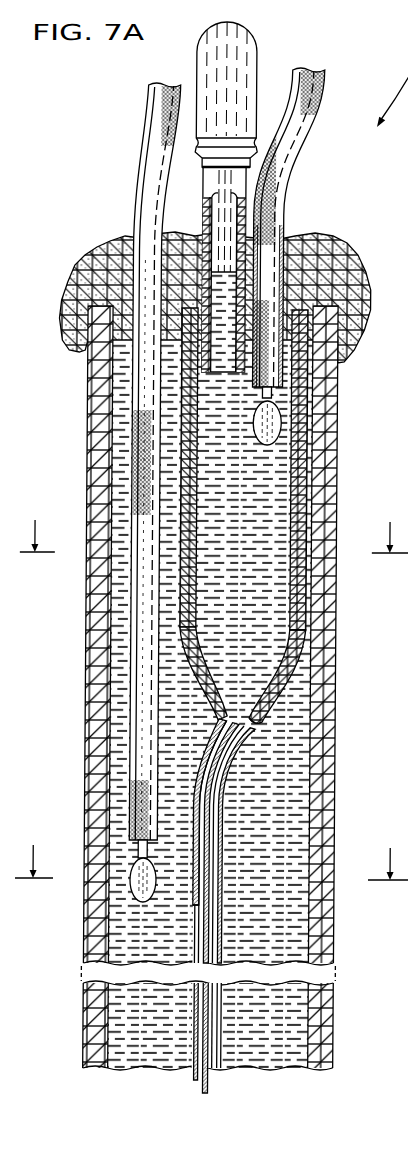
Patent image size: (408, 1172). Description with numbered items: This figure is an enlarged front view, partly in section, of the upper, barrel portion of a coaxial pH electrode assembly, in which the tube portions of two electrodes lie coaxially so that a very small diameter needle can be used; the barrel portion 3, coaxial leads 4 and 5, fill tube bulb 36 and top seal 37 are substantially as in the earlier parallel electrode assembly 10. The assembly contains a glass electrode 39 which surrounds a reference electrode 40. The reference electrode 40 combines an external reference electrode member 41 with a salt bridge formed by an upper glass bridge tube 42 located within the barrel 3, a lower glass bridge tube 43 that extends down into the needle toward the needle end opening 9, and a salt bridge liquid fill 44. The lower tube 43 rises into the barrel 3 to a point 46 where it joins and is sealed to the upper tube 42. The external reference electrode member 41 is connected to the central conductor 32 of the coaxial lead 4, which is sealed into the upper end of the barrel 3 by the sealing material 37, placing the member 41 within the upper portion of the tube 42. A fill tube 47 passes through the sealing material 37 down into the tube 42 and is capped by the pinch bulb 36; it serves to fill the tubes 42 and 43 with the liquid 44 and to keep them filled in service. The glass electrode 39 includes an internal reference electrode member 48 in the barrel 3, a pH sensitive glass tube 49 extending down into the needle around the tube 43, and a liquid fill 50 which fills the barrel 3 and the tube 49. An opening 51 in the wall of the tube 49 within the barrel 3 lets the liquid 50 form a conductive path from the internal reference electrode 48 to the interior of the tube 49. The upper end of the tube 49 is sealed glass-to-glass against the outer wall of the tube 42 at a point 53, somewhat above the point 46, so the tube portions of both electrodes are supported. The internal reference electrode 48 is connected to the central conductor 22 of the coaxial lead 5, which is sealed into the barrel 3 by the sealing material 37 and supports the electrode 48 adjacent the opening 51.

The barrel portion 3 is at (97, 421).
The coaxial lead 4 is at (290, 147).
The coaxial lead 5 is at (156, 128).
The end opening 9 is at (214, 525).
The electrode assembly 10 is at (211, 851).
The central conductor 22 is at (142, 846).
The central conductor 32 is at (276, 393).
The fill tube bulb 36 is at (213, 63).
The top seal 37 is at (90, 270).
The glass electrode 39 is at (117, 875).
The reference electrode 40 is at (303, 679).
The external reference electrode member 41 is at (272, 427).
The upper glass bridge tube 42 is at (297, 593).
The lower glass bridge tube 43 is at (221, 782).
The salt bridge liquid fill 44 is at (266, 492).
The joining point 46 is at (248, 735).
The fill tube 47 is at (213, 180).
The internal reference electrode member 48 is at (142, 887).
The pH sensitive glass tube 49 is at (225, 817).
The liquid fill 50 is at (282, 907).
The opening 51 is at (199, 897).
The sealing point 53 is at (278, 710).